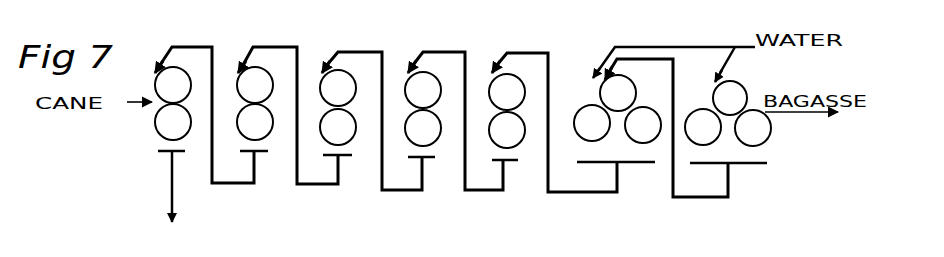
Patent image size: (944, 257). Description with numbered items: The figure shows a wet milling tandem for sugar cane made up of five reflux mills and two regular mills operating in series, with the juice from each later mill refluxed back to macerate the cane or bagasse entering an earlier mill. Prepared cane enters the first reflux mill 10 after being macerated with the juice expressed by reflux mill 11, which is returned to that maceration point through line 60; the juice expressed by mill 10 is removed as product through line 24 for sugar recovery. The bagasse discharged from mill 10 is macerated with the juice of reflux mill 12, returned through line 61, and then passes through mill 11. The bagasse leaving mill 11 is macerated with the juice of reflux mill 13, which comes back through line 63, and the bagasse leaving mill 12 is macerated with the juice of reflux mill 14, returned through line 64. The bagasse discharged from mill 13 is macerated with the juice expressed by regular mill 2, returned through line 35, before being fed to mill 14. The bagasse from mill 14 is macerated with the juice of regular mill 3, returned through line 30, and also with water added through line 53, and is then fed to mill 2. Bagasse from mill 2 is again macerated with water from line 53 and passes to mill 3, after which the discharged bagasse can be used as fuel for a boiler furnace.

The reflux mill 10 is at (165, 95).
The reflux mill 11 is at (247, 95).
The reflux mill 12 is at (330, 98).
The reflux mill 13 is at (415, 100).
The reflux mill 14 is at (499, 102).
The regular mill 2 is at (612, 103).
The regular mill 3 is at (724, 108).
The product line 24 is at (172, 172).
The juice return line 60 is at (232, 185).
The juice return line 61 is at (313, 193).
The juice return line 63 is at (407, 192).
The juice return line 64 is at (485, 194).
The juice return line 35 is at (588, 196).
The juice return line 30 is at (702, 199).
The water line 53 is at (668, 44).